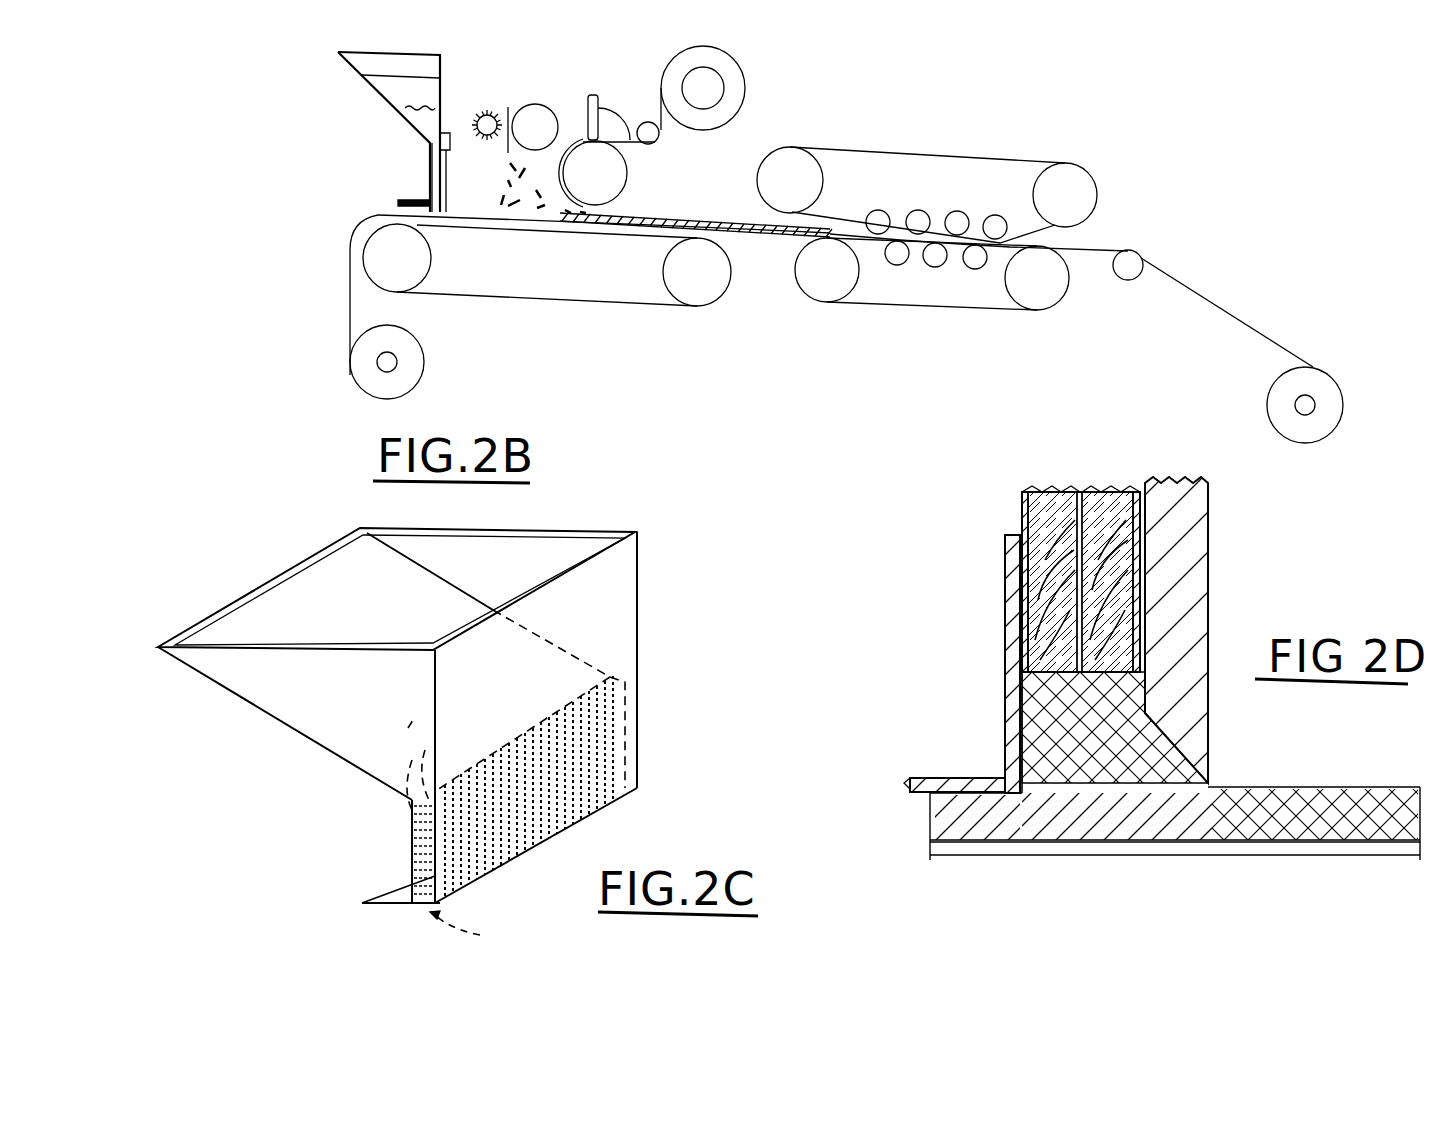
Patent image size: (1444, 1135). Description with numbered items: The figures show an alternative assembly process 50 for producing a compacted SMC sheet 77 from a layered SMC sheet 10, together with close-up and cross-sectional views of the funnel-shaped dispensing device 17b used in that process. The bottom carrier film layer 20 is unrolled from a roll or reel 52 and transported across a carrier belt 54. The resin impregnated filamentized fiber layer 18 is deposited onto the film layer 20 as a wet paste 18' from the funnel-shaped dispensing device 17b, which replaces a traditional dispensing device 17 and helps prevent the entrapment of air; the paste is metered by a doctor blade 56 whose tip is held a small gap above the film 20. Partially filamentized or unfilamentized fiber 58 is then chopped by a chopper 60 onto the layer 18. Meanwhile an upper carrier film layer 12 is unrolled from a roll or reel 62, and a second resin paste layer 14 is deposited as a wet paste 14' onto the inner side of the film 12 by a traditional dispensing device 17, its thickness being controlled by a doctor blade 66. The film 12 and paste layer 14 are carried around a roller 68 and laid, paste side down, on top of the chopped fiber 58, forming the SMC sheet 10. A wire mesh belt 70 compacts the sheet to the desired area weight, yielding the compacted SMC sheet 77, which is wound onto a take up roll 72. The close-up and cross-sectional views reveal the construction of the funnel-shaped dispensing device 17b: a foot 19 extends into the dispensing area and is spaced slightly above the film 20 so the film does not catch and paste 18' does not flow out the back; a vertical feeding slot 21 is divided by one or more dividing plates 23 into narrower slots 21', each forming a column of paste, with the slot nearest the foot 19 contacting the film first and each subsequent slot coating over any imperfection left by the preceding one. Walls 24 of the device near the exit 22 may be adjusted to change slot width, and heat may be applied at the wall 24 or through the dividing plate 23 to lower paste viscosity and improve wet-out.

In FIG. 2B, the sheet molding compound sheet 10 is at (716, 214).
In FIG. 2B, the upper carrier film layer 12 is at (670, 122).
In FIG. 2B, the second resin paste layer 14 is at (573, 112).
In FIG. 2B, the wet paste 14' is at (630, 62).
In FIG. 2B, the traditional dispensing device 17 is at (621, 120).
In FIG. 2B, the funnel-shaped dispensing device 17b is at (360, 83).
In FIG. 2C, the funnel-shaped dispensing device 17b is at (237, 702).
In FIG. 2D, the funnel-shaped dispensing device 17b is at (990, 528).
In FIG. 2B, the resin impregnated filamentized fiber layer 18 is at (604, 208).
In FIG. 2D, the resin impregnated filamentized fiber layer 18 is at (1175, 875).
In FIG. 2B, the wet paste 18' is at (365, 146).
In FIG. 2C, the foot 19 is at (364, 901).
In FIG. 2D, the foot 19 is at (954, 774).
In FIG. 2B, the bottom carrier film layer 20 is at (350, 287).
In FIG. 2D, the bottom carrier film layer 20 is at (1148, 852).
In FIG. 2C, the vertical feeding slot 21 is at (463, 930).
In FIG. 2C, the narrower slot 21' is at (403, 765).
In FIG. 2D, the narrower slot 21' is at (1041, 546).
In FIG. 2C, the exit 22 is at (443, 904).
In FIG. 2C, the dividing plate 23 is at (416, 892).
In FIG. 2D, the dividing plate 23 is at (1102, 492).
In FIG. 2C, the wall 24 is at (412, 828).
In FIG. 2D, the wall 24 is at (1021, 498).
In FIG. 2B, the assembly process 50 is at (974, 212).
In FIG. 2B, the roll or reel 52 is at (428, 357).
In FIG. 2B, the carrier belt 54 is at (560, 300).
In FIG. 2B, the doctor blade 56 is at (445, 188).
In FIG. 2D, the doctor blade 56 is at (1200, 515).
In FIG. 2B, the partially filamentized or unfilamentized fiber 58 is at (543, 187).
In FIG. 2B, the chopper 60 is at (486, 112).
In FIG. 2B, the roll or reel 62 is at (745, 85).
In FIG. 2B, the doctor blade 66 is at (592, 95).
In FIG. 2B, the roller 68 is at (628, 187).
In FIG. 2B, the wire mesh belt 70 is at (975, 153).
In FIG. 2B, the take up roll 72 is at (1272, 382).
In FIG. 2B, the compacted SMC sheet 77 is at (1228, 306).